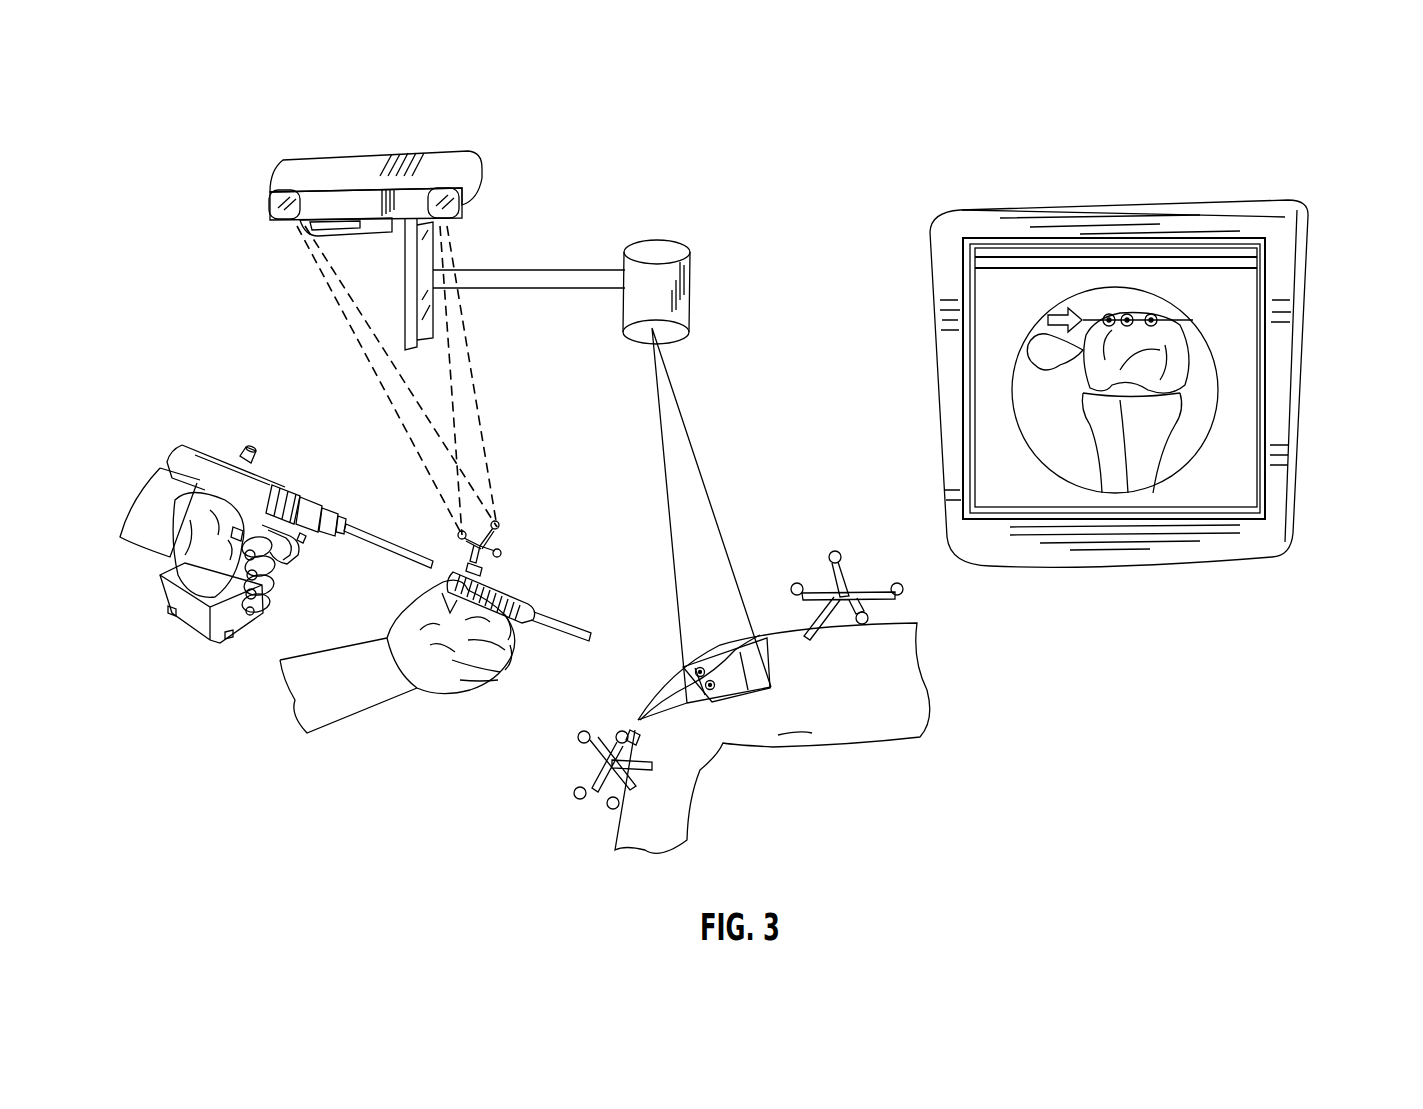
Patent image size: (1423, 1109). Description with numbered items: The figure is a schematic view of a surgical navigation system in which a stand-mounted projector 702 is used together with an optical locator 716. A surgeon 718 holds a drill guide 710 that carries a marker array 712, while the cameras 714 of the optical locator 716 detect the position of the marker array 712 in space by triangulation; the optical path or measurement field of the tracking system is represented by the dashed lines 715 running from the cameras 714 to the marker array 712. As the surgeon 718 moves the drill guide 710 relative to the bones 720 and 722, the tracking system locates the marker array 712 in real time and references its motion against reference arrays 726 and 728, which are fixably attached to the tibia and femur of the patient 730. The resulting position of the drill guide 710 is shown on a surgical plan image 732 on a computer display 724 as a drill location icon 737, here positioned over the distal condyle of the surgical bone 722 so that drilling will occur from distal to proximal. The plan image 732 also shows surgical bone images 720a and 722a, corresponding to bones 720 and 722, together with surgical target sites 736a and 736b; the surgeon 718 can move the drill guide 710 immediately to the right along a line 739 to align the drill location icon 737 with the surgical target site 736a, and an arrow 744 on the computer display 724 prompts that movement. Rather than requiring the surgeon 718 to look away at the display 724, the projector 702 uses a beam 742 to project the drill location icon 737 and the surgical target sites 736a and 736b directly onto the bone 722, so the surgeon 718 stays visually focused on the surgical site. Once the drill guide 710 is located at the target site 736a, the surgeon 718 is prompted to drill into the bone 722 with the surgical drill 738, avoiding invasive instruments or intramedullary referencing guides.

The stand-mounted projector 702 is at (684, 290).
The drill guide 710 is at (508, 582).
The marker array 712 is at (455, 553).
The cameras 714 is at (278, 205).
The dashed lines 715 is at (478, 390).
The optical locator 716 is at (232, 140).
The surgeon 718 is at (340, 707).
The bone 720 is at (665, 708).
The surgical bone image 720a is at (1135, 452).
The surgical bone 722 is at (727, 660).
The surgical bone image 722a is at (1197, 373).
The computer display 724 is at (1316, 394).
The reference array 726 is at (672, 795).
The reference array 728 is at (825, 640).
The patient 730 is at (860, 743).
The surgical plan image 732 is at (1245, 453).
The surgical target site 736a is at (697, 670).
The surgical target site 736b is at (712, 690).
The drill location icon 737 is at (1104, 316).
The surgical drill 738 is at (186, 440).
The line 739 is at (1124, 315).
The beam 742 is at (712, 503).
The arrow 744 is at (1060, 312).